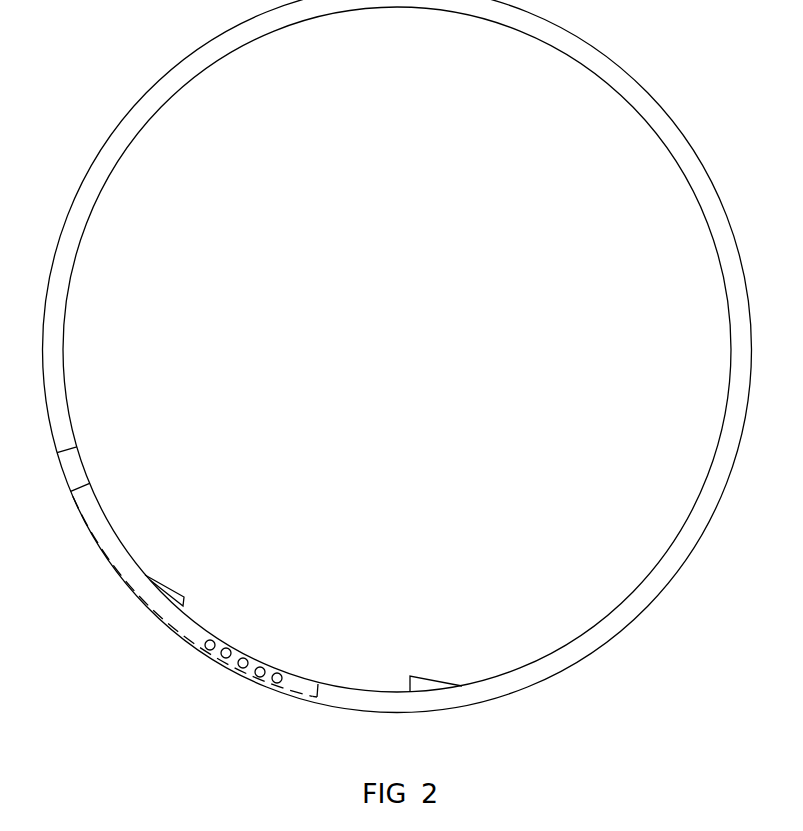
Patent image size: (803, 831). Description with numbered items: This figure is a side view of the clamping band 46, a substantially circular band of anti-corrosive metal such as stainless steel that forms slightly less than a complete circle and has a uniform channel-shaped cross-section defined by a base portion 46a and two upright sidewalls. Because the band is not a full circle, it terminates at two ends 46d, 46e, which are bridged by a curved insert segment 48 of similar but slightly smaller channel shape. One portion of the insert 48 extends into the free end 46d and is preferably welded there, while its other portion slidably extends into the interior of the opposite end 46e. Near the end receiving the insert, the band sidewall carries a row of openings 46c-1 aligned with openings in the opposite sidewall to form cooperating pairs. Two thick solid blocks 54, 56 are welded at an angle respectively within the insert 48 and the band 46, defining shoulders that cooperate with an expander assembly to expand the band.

The clamping band 46 is at (577, 610).
The base portion 46a is at (367, 690).
The openings 46c-1 is at (277, 673).
The free end 46d is at (83, 460).
The opposite end 46e is at (92, 487).
The curved insert segment 48 is at (87, 475).
The thick solid block 54 is at (178, 592).
The thick solid block 56 is at (428, 676).